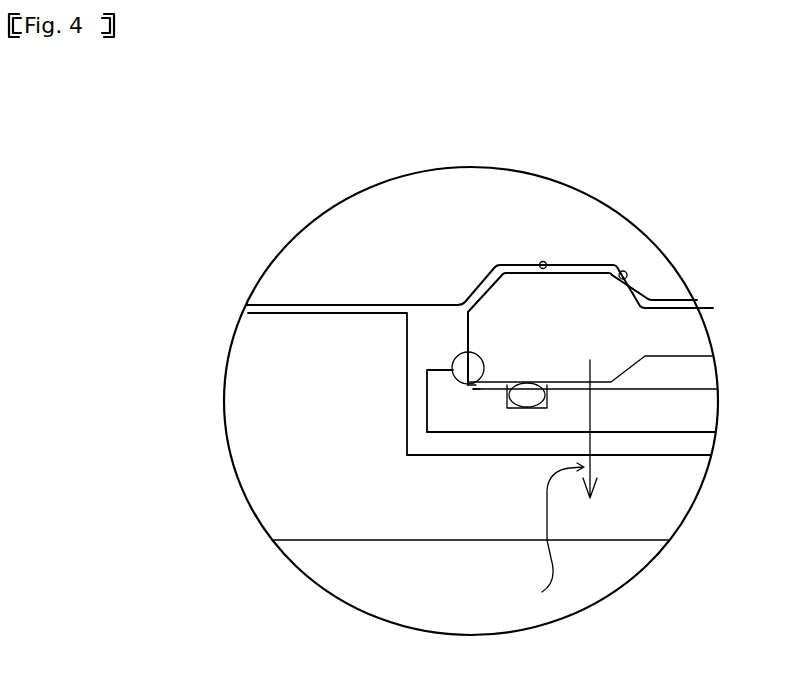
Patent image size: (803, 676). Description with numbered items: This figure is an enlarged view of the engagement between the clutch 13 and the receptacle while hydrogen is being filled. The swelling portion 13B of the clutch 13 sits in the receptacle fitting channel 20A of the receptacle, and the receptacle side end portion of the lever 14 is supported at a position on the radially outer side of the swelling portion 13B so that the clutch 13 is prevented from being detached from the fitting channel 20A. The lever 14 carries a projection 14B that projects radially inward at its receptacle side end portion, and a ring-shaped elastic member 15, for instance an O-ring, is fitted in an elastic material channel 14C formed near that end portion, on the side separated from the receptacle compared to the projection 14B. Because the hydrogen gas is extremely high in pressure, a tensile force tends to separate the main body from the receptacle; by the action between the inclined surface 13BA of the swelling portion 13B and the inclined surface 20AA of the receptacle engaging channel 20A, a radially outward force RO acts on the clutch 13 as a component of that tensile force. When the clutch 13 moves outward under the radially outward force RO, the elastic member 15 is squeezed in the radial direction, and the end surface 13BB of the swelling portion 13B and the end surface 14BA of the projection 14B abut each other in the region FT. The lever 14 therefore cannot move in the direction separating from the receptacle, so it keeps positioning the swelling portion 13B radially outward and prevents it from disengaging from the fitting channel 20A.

The clutch 13 is at (549, 287).
The swelling portion 13B is at (505, 291).
The inclined surface 13BA is at (637, 287).
The end surface 13BB is at (467, 338).
The lever 14 is at (516, 420).
The projection 14B is at (433, 417).
The end surface 14BA is at (473, 390).
The elastic material channel 14C is at (530, 409).
The elastic member 15 is at (520, 404).
The receptacle fitting channel 20A is at (479, 216).
The inclined surface 20AA is at (623, 271).
The region FT is at (453, 367).
The radially outward force RO is at (548, 533).